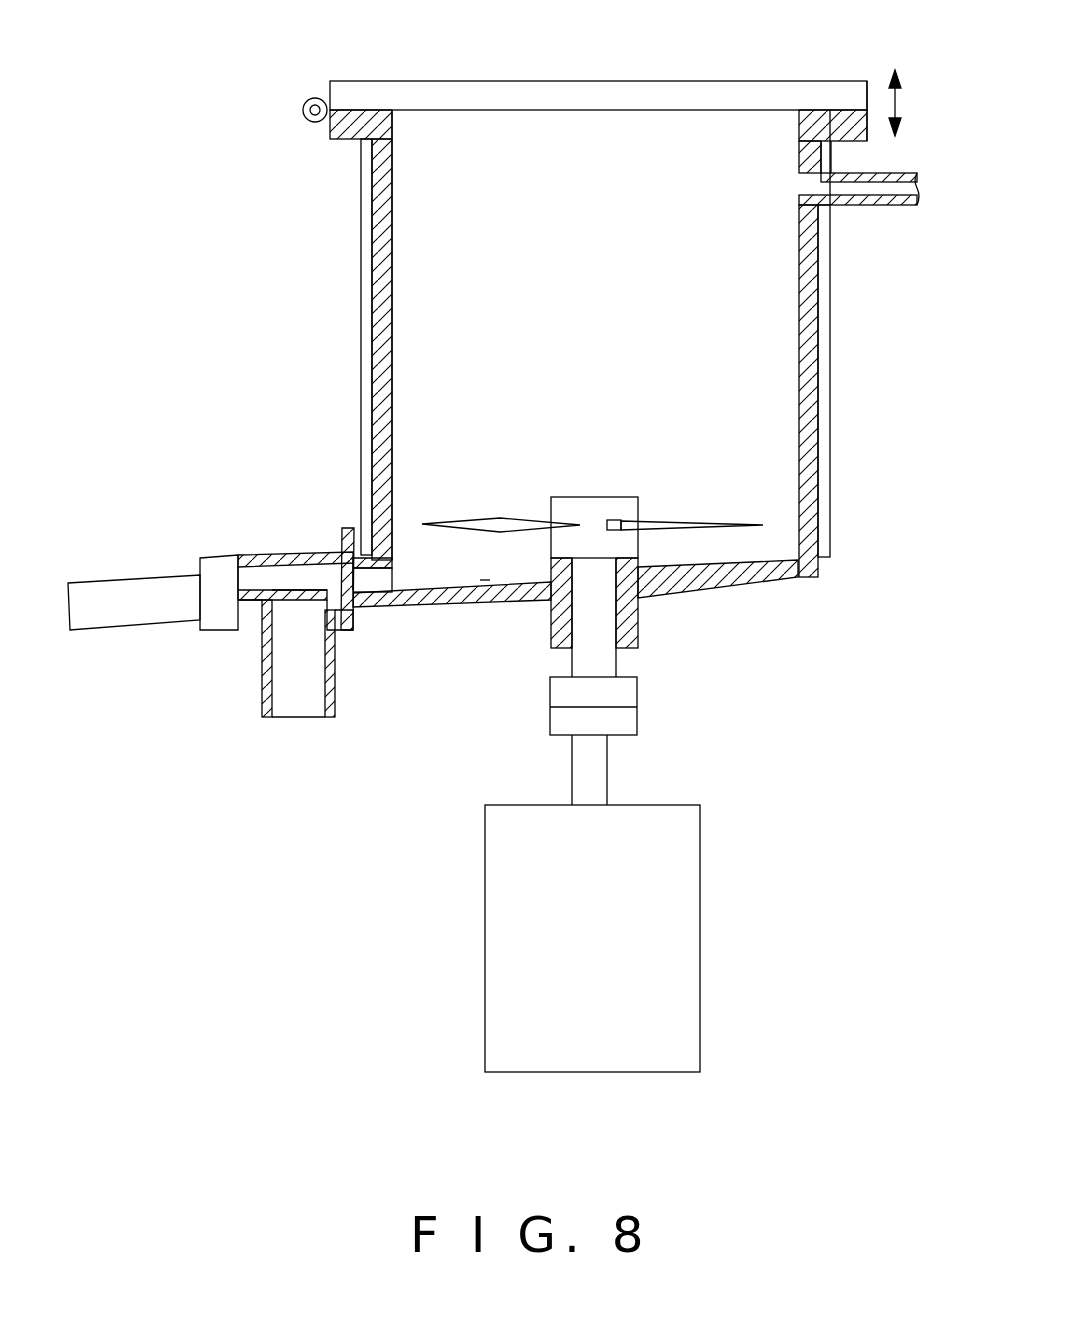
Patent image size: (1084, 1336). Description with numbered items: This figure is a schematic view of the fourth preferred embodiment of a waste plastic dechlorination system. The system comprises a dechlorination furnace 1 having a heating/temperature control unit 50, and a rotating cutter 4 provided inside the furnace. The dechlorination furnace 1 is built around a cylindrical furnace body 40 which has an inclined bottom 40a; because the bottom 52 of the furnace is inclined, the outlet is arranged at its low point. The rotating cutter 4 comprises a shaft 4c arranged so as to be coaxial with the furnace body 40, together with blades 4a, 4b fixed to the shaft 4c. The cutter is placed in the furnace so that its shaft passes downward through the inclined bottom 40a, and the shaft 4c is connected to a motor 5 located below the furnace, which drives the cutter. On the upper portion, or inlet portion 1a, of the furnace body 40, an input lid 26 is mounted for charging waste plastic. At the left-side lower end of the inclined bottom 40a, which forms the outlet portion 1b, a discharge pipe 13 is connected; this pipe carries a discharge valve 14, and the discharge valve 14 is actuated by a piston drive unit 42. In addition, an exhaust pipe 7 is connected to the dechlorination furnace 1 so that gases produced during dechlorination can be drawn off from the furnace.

The input lid 26 is at (672, 88).
The upper portion (inlet portion) 1a is at (483, 123).
The exhaust pipe 7 is at (878, 206).
The dechlorination furnace 1 is at (856, 352).
The heating/temperature control unit 50 is at (360, 376).
The rotating cutter 4 is at (592, 595).
The blade 4a is at (478, 520).
The blade 4b is at (712, 520).
The shaft 4c is at (612, 497).
The furnace body 40 is at (805, 482).
The discharge valve 14 is at (340, 553).
The piston drive unit 42 is at (112, 590).
The outlet portion 1b is at (400, 568).
The bottom 52 is at (487, 575).
The inclined bottom 40a is at (707, 590).
The discharge pipe 13 is at (262, 695).
The motor 5 is at (700, 965).